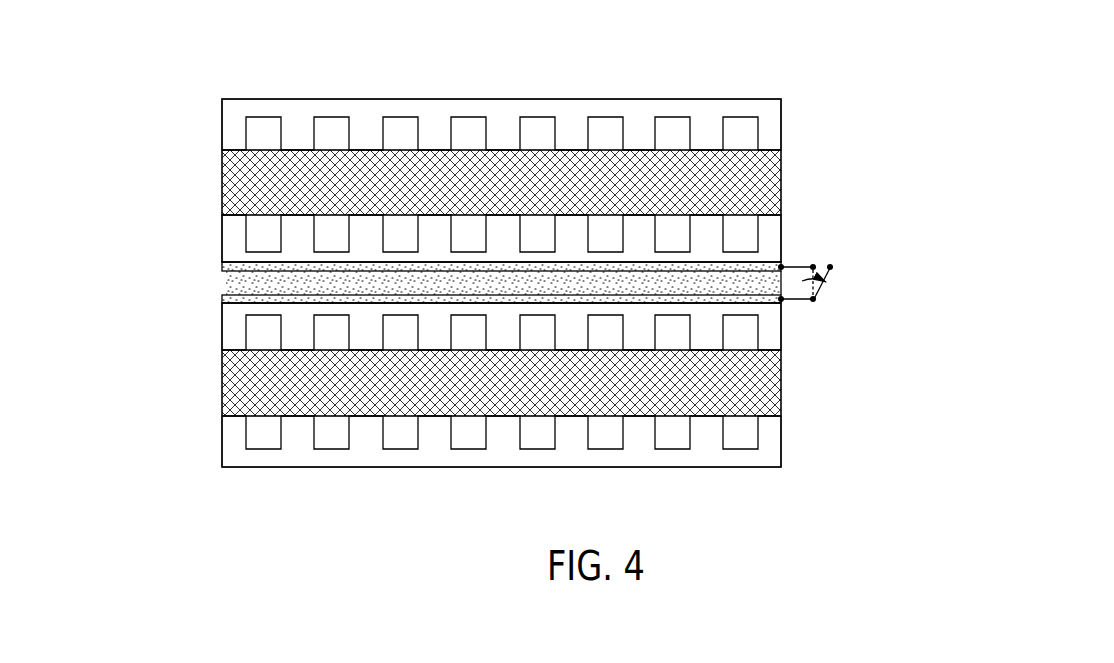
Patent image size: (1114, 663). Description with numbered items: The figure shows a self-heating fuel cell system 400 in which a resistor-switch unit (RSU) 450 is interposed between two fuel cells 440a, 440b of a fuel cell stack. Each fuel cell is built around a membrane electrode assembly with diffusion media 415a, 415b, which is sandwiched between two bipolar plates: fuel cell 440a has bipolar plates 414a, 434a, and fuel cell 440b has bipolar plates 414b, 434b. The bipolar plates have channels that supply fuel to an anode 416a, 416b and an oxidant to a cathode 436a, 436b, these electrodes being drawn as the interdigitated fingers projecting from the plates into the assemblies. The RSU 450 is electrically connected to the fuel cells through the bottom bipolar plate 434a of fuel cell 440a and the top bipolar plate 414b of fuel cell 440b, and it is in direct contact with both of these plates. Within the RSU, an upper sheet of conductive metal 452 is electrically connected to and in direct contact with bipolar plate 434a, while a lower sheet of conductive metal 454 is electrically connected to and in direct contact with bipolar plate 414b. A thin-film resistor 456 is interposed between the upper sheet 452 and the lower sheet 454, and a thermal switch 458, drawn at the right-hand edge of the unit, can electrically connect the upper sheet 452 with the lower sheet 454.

The battery assembly 400 is at (344, 78).
The fuel cell 440a is at (823, 183).
The fuel cell 440b is at (867, 387).
The bipolar plate 414a is at (773, 118).
The top bipolar plate 414b is at (773, 348).
The anode 416a is at (254, 143).
The anode 416b is at (254, 332).
The membrane electrode assembly with diffusion media 415a is at (775, 168).
The membrane electrode assembly with diffusion media 415b is at (773, 390).
The bottom bipolar plate 434a is at (773, 236).
The bipolar plate 434b is at (773, 452).
The cathode 436a is at (254, 240).
The cathode 436b is at (254, 430).
The resistor-switch unit 450 is at (871, 289).
The upper sheet of conductive metal 452 is at (232, 266).
The thin-film resistor 456 is at (228, 274).
The lower sheet of conductive metal 454 is at (230, 299).
The thermal switch 458 is at (817, 303).